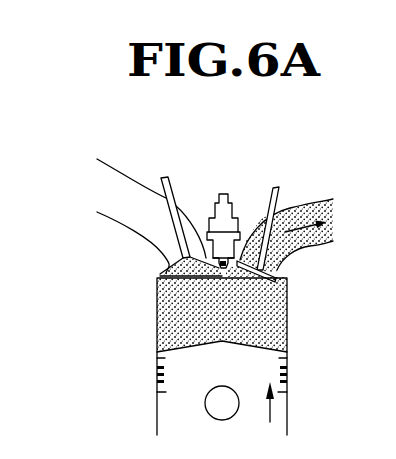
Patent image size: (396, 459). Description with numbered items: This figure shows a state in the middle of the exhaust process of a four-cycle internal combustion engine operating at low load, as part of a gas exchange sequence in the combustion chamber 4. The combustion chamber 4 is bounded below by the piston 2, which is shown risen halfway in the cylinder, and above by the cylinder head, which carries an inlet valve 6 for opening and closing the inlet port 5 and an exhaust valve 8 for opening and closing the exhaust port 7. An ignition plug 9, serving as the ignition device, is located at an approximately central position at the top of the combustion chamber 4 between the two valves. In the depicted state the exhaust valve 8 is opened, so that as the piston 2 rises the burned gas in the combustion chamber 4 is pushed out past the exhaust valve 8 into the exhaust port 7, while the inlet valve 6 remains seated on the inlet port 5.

The piston 2 is at (162, 398).
The combustion chamber 4 is at (167, 303).
The inlet port 5 is at (119, 216).
The inlet valve 6 is at (178, 233).
The exhaust port 7 is at (322, 224).
The exhaust valve 8 is at (277, 275).
The ignition plug 9 is at (229, 195).